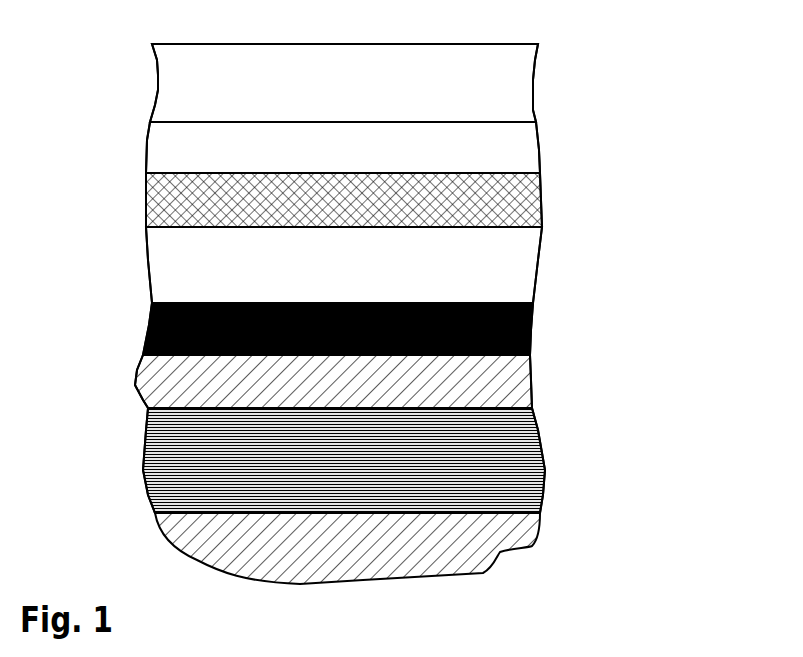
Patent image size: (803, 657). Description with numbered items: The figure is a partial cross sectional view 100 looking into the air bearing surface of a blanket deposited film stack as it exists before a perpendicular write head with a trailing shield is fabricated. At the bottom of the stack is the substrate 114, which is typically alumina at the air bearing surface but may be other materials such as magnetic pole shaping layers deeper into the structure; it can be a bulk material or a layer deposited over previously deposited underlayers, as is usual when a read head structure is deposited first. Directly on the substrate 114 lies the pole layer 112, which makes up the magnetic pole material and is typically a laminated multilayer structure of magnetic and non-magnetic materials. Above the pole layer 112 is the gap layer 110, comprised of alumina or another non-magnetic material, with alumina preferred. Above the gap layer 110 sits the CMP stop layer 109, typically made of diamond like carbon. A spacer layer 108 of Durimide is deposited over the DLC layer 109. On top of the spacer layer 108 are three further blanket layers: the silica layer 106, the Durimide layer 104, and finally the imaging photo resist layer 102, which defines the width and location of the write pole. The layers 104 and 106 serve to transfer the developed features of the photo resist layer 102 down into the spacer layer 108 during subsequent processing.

The partial cross sectional view 100 is at (603, 70).
The imaging photo resist layer 102 is at (307, 104).
The Durimide layer 104 is at (312, 158).
The silica layer 106 is at (309, 210).
The spacer layer 108 is at (312, 274).
The CMP stop layer 109 is at (312, 344).
The gap layer 110 is at (315, 390).
The pole layer 112 is at (328, 468).
The substrate 114 is at (333, 552).